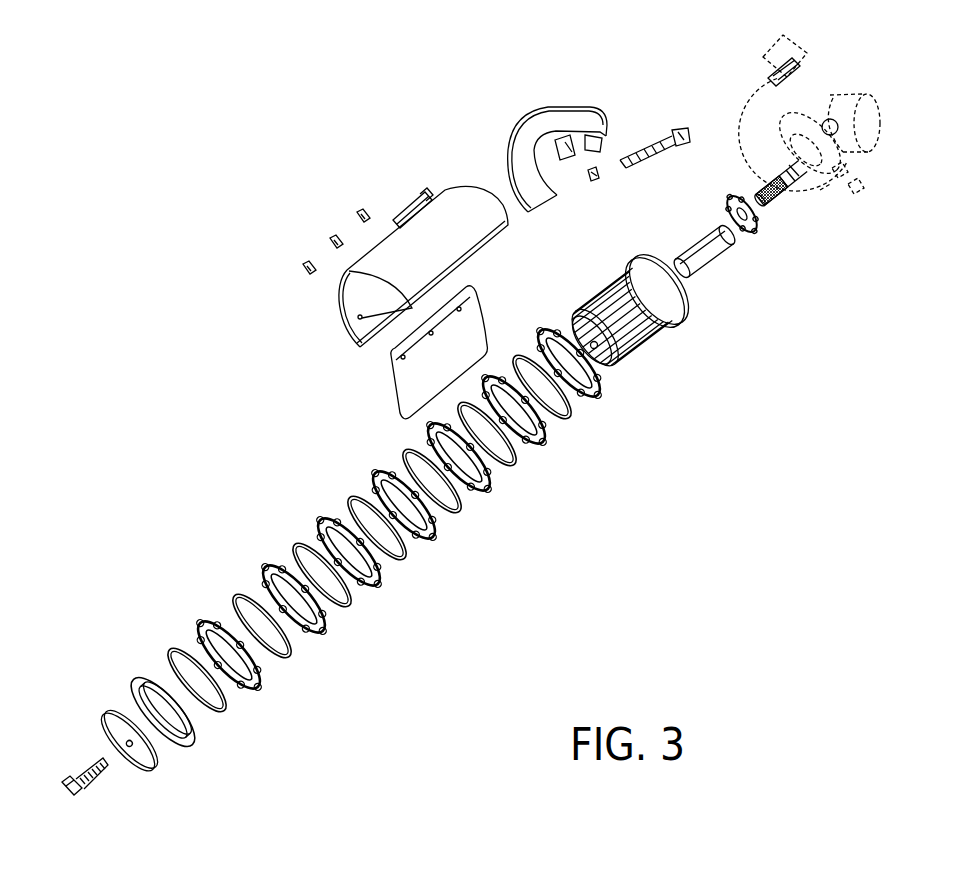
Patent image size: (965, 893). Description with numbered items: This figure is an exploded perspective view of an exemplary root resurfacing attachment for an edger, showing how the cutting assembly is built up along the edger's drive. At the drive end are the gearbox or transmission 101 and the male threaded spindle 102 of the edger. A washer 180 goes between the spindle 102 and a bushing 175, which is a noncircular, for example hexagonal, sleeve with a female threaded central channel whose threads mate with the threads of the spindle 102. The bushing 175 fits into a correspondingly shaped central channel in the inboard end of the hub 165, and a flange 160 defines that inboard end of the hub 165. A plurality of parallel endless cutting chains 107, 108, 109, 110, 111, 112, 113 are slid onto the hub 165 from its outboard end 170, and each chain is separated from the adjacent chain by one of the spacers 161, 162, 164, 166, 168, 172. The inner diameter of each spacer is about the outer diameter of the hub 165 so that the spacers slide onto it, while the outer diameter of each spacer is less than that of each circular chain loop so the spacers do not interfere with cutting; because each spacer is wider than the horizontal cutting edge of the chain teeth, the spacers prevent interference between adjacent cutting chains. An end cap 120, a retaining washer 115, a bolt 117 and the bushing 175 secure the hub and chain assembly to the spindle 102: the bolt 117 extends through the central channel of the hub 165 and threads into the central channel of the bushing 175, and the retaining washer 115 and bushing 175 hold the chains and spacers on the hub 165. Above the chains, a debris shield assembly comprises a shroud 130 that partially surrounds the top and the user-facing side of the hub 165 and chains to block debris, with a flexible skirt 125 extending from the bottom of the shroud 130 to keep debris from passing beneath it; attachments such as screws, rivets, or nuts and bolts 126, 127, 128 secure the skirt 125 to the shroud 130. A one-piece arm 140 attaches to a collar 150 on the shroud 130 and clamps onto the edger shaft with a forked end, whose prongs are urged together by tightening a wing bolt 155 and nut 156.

The gearbox or transmission 101 is at (820, 95).
The spindle 102 is at (776, 203).
The endless cutting chain 107 is at (255, 688).
The endless cutting chain 108 is at (321, 633).
The endless cutting chain 109 is at (375, 586).
The endless cutting chain 110 is at (426, 537).
The endless cutting chain 111 is at (484, 490).
The endless cutting chain 112 is at (532, 445).
The endless cutting chain 113 is at (595, 396).
The retaining washer 115 is at (155, 770).
The bolt 117 is at (92, 782).
The end cap 120 is at (185, 733).
The flexible skirt 125 is at (398, 385).
The attachment (screw, rivet, or nut and bolt) 126 is at (302, 265).
The attachment (screw, rivet, or nut and bolt) 127 is at (333, 237).
The attachment (screw, rivet, or nut and bolt) 128 is at (360, 212).
The shroud 130 is at (477, 232).
The arm 140 is at (523, 128).
The collar 150 is at (423, 196).
The wing bolt 155 is at (677, 133).
The nut 156 is at (591, 182).
The flange 160 is at (688, 310).
The spacer 161 is at (173, 653).
The spacer 162 is at (240, 597).
The spacer 164 is at (300, 550).
The hub 165 is at (648, 342).
The spacer 166 is at (363, 500).
The spacer 168 is at (408, 453).
The outboard end 170 is at (603, 358).
The spacer 172 is at (555, 413).
The bushing 175 is at (708, 254).
The washer 180 is at (755, 232).